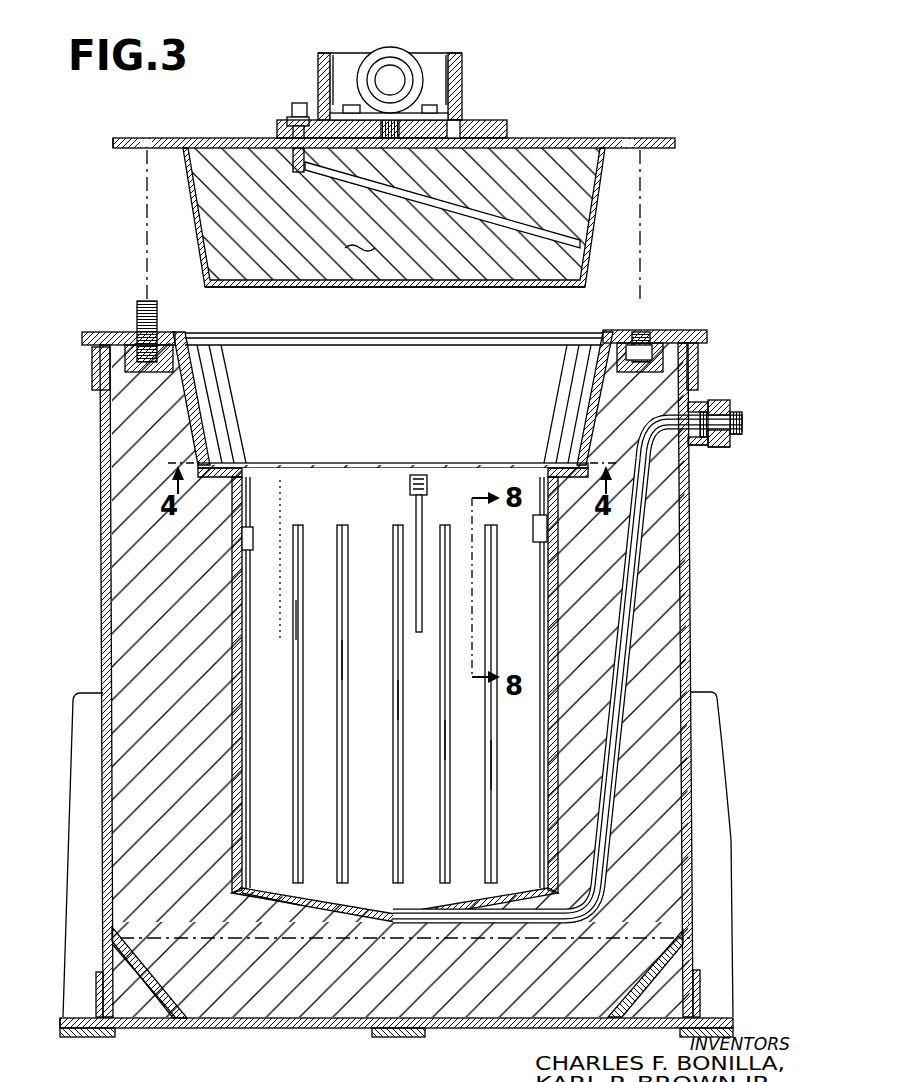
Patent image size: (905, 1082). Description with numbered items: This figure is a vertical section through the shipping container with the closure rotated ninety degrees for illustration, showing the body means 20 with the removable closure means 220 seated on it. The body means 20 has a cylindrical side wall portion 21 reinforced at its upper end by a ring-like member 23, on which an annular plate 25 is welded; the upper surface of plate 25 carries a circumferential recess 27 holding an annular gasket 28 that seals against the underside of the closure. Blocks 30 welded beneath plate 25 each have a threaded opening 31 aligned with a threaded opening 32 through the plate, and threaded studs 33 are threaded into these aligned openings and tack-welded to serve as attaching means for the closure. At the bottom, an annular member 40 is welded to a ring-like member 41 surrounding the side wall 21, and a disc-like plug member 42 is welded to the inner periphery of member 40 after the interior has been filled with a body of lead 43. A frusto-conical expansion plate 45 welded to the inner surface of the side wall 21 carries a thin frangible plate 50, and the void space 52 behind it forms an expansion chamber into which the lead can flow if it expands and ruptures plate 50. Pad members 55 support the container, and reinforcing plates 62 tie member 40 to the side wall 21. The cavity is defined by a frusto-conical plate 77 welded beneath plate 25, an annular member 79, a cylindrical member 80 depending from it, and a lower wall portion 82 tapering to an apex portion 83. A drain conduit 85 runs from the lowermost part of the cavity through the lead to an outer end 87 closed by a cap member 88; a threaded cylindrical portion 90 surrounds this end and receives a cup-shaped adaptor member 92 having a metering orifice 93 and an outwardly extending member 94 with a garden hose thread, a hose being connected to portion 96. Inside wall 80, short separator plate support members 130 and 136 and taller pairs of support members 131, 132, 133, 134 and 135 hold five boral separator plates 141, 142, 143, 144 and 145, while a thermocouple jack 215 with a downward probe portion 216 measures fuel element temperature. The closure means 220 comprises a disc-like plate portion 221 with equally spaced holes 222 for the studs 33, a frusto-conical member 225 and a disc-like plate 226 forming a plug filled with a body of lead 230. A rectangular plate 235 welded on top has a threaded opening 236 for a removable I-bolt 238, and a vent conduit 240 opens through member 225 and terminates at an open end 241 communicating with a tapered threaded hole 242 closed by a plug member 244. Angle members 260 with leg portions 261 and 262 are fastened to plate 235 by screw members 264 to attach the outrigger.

The body means 20 is at (80, 512).
The side wall portion 21 is at (100, 626).
The ring-like member 23 is at (92, 378).
The annular plate 25 is at (705, 333).
The recess 27 is at (678, 330).
The annular gasket 28 is at (642, 330).
The blocks 30 is at (166, 350).
The threaded opening 31 is at (600, 398).
The threaded opening 32 is at (632, 330).
The threaded studs 33 is at (135, 306).
The annular member 40 is at (62, 1022).
The ring-like member 41 is at (96, 980).
The disc-like plug member 42 is at (265, 1029).
The body of lead 43 is at (500, 1005).
The expansion plate 45 is at (190, 1015).
The frangible plate 50 is at (143, 980).
The void space 52 is at (697, 972).
The pad members 55 is at (72, 1038).
The reinforcing plates 62 is at (75, 888).
The frusto-conically shaped plate 77 is at (200, 400).
The annular member 79 is at (222, 462).
The cylindrical member 80 is at (232, 618).
The lower wall portion 82 is at (300, 920).
The apex portion 83 is at (395, 935).
The drain conduit 85 is at (596, 912).
The outer end 87 is at (698, 446).
The closure member 88 is at (718, 413).
The cylindrical portion 90 is at (692, 403).
The cup-shaped adaptor member 92 is at (725, 449).
The metering orifice 93 is at (742, 428).
The outwardly extending member 94 is at (738, 440).
The hose connection portion 96 is at (742, 420).
The separator plate support members 130 is at (250, 527).
The separator plate support members 131 is at (296, 606).
The separator plate support members 132 is at (340, 650).
The separator plate support members 133 is at (398, 690).
The separator plate support members 134 is at (442, 735).
The separator plate support members 135 is at (490, 760).
The separator plate support members 136 is at (540, 542).
The separator plate 141 is at (298, 527).
The separator plate 142 is at (345, 525).
The separator plate 143 is at (393, 528).
The separator plate 144 is at (440, 528).
The separator plate 145 is at (487, 548).
The thermocouple jack 215 is at (408, 484).
The probe portion 216 is at (418, 610).
The closure means 220 is at (640, 92).
The disc-like plate portion 221 is at (120, 138).
The lid plate 222 is at (150, 138).
The frusto-conically shaped member 225 is at (188, 210).
The disc-like plate 226 is at (365, 288).
The body of lead 230 is at (367, 236).
The rectangular plate 235 is at (505, 130).
The central threaded opening 236 is at (405, 140).
The I-bolt 238 is at (399, 44).
The conduit 240 is at (455, 216).
The open end 241 is at (298, 172).
The tapered threaded hole 242 is at (287, 121).
The plug member 244 is at (292, 108).
The angle members 260 is at (317, 62).
The leg portions 261 is at (335, 60).
The leg portions 262 is at (320, 95).
The screw members 264 is at (465, 107).